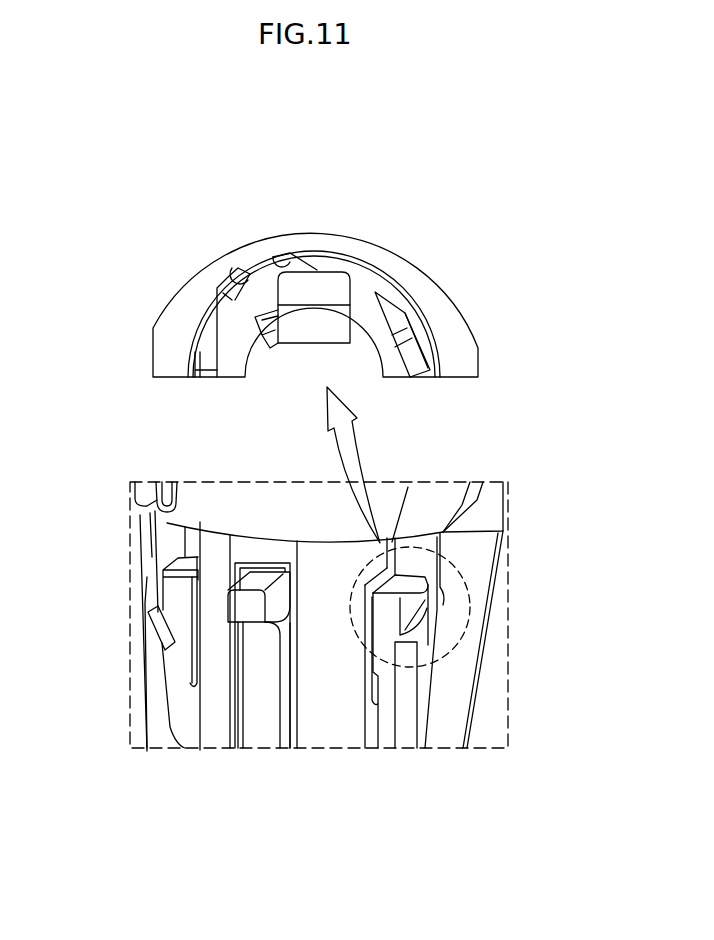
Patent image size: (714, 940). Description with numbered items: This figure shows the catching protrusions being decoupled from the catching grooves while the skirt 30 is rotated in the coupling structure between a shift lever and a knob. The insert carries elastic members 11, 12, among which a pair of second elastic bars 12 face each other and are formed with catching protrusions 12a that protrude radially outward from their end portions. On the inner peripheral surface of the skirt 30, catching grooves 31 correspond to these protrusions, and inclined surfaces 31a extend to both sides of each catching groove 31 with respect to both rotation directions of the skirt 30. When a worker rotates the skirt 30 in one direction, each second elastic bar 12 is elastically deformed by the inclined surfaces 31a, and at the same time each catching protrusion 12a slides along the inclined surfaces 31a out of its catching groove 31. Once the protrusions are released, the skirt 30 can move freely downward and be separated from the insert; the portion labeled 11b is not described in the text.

The elastic member 11 is at (263, 703).
The support block 11b is at (247, 605).
The second elastic bar 12 is at (183, 675).
The catching protrusion 12a is at (322, 283).
The skirt 30 is at (450, 690).
The catching groove 31 is at (226, 287).
The inclined surface 31a is at (273, 257).